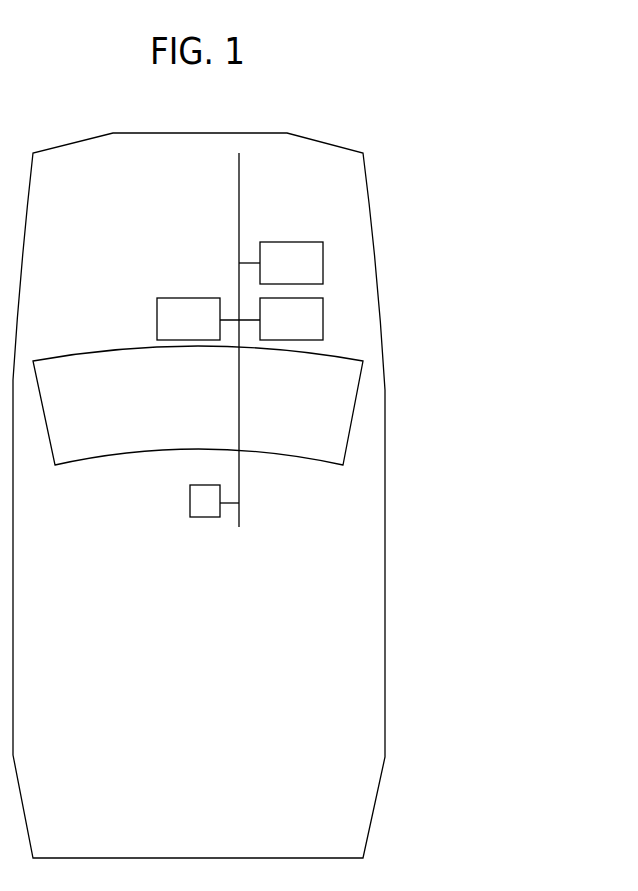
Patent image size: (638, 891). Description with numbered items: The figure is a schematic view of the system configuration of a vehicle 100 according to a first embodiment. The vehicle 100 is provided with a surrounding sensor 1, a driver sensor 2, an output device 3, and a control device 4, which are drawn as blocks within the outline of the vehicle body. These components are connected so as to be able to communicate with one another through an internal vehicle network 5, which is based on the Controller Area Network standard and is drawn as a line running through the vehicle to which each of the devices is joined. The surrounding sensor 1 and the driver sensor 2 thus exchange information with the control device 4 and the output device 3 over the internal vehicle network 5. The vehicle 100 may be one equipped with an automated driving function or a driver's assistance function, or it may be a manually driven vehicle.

The vehicle 100 is at (383, 732).
The surrounding sensor 1 is at (190, 503).
The driver sensor 2 is at (323, 324).
The output device 3 is at (157, 320).
The control device 4 is at (323, 263).
The internal vehicle network 5 is at (239, 400).